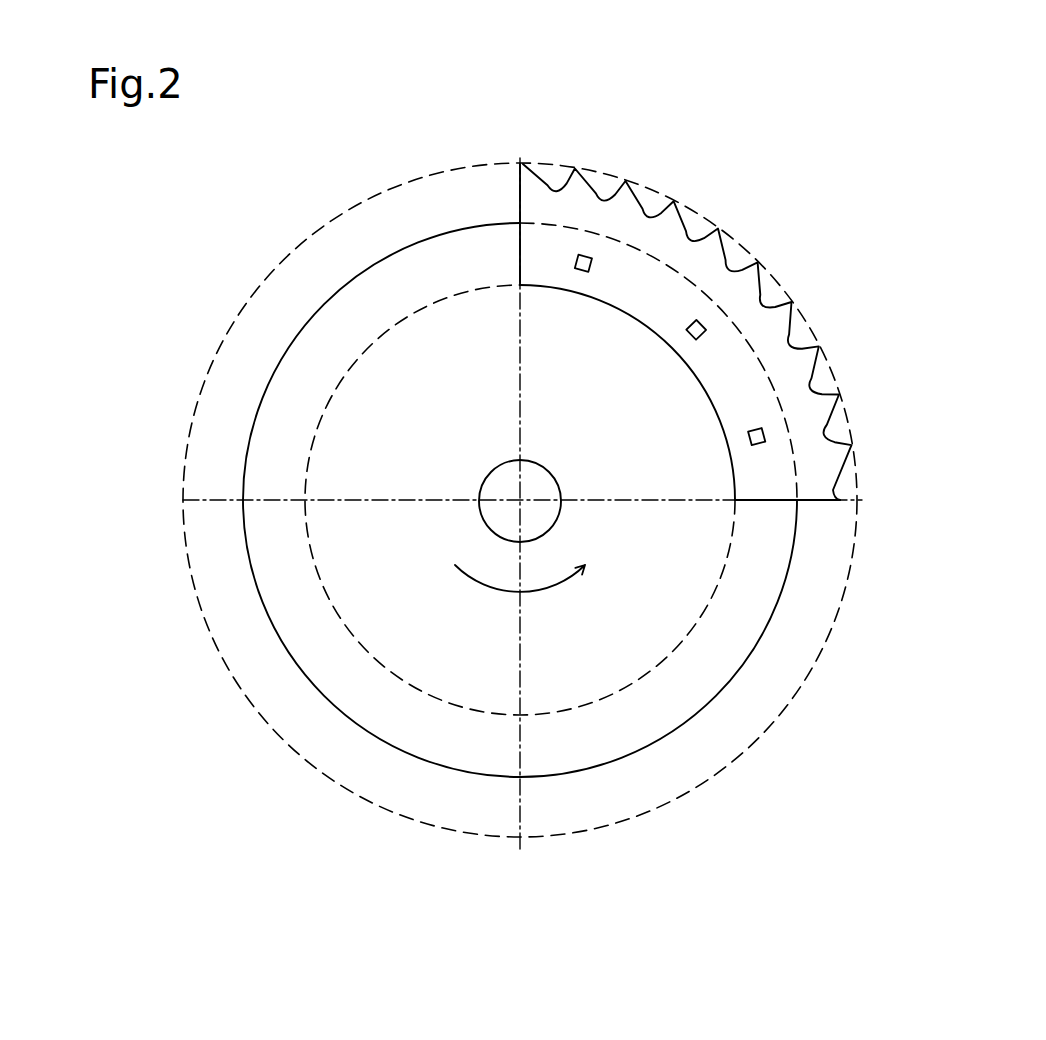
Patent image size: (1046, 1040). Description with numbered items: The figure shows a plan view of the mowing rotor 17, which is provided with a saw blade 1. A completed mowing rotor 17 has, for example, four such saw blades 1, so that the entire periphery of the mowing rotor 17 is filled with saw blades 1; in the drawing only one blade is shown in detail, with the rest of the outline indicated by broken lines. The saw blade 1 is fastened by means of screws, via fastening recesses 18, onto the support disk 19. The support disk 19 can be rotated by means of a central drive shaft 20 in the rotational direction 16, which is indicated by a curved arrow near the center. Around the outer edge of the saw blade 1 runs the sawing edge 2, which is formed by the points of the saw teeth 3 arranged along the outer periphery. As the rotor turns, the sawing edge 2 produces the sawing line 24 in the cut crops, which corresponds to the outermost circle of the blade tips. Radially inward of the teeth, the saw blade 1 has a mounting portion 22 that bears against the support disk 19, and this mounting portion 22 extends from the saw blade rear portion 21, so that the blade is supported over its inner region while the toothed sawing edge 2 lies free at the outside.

The saw blade 1 is at (611, 220).
The sawing edge 2 is at (575, 154).
The saw teeth 3 is at (790, 298).
The rotational direction 16 is at (492, 593).
The mowing rotor 17 is at (187, 340).
The fastening recesses 18 is at (705, 326).
The support disk 19 is at (372, 456).
The central drive shaft 20 is at (497, 515).
The saw blade rear portion 21 is at (583, 297).
The mounting portion 22 is at (695, 357).
The sawing line 24 is at (183, 518).